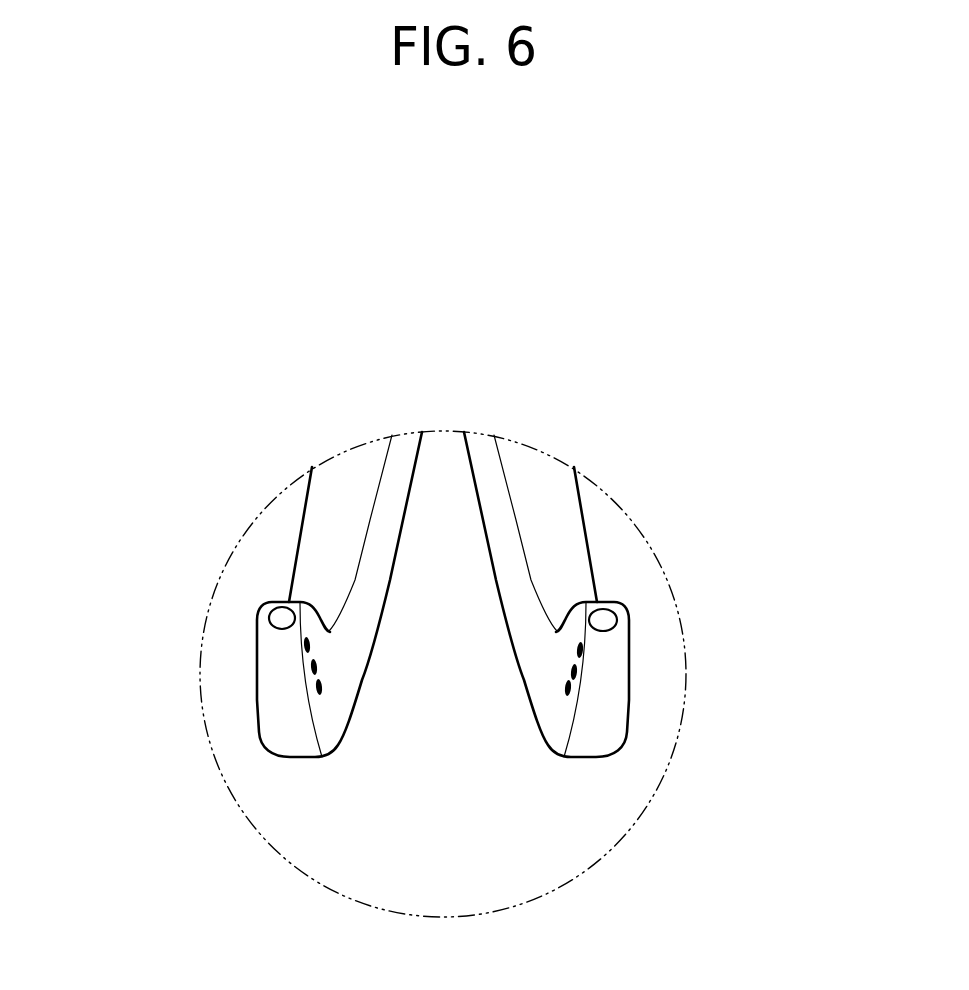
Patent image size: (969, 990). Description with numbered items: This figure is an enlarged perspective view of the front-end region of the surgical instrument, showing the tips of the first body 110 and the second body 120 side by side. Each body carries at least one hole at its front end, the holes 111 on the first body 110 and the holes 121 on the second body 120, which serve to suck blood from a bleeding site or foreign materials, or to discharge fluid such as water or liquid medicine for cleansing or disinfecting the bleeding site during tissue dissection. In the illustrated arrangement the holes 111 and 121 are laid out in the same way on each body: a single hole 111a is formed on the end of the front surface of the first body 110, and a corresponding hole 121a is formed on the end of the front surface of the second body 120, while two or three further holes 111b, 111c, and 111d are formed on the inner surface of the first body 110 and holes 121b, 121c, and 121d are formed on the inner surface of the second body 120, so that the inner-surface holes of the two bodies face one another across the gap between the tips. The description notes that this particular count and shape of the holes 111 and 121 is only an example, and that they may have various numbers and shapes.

The first body 110 is at (602, 521).
The second body 120 is at (284, 521).
The hole 111 is at (723, 686).
The hole 111a is at (603, 620).
The hole 111b is at (582, 650).
The hole 111c is at (575, 677).
The hole 111d is at (570, 695).
The hole 121 is at (167, 684).
The hole 121a is at (282, 618).
The hole 121b is at (305, 649).
The hole 121c is at (312, 677).
The hole 121d is at (317, 695).